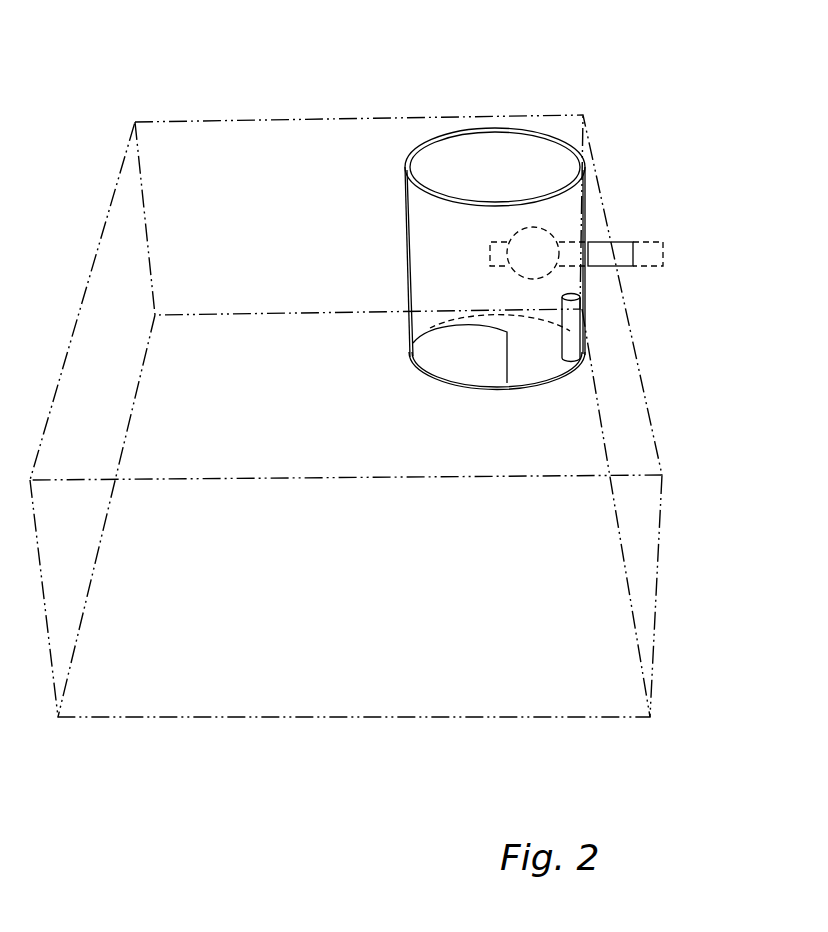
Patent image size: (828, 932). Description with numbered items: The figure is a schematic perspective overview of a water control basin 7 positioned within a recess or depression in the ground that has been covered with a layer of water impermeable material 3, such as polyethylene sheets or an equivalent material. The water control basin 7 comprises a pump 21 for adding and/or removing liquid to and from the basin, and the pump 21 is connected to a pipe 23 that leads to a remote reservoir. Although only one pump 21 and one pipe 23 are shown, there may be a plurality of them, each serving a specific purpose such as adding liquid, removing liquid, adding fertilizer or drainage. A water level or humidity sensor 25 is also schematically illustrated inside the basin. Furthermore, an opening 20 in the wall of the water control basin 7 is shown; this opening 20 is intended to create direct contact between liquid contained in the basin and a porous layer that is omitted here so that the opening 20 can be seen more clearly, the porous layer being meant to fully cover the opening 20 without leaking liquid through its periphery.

The layer of water impermeable material 3 is at (318, 350).
The water control basin 7 is at (493, 148).
The opening 20 is at (483, 368).
The pump 21 is at (537, 243).
The pipe 23 is at (653, 255).
The water level or humidity sensor 25 is at (570, 340).